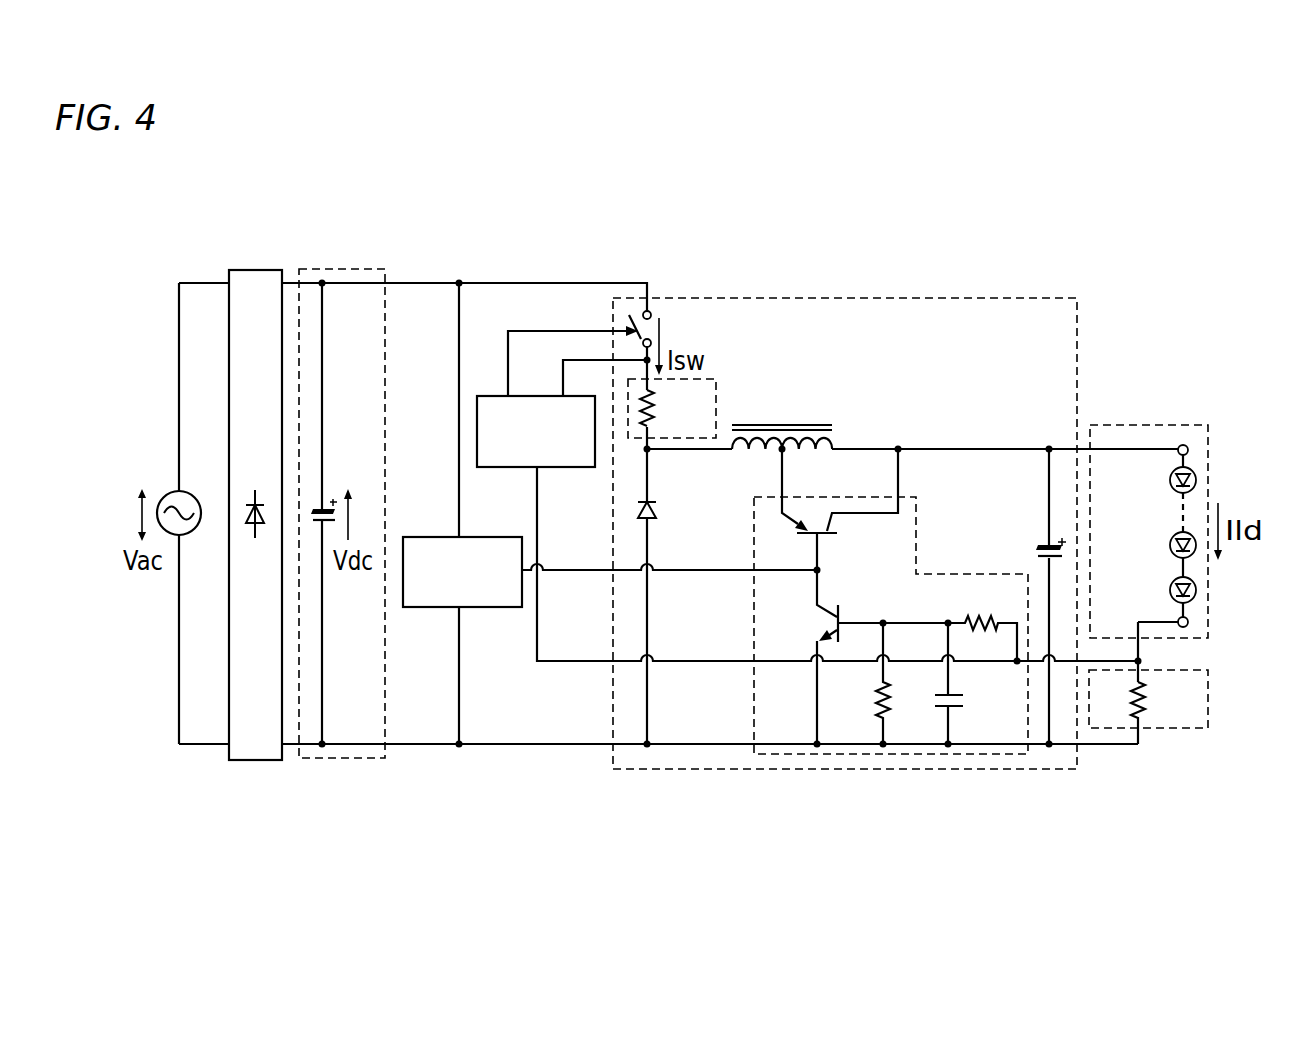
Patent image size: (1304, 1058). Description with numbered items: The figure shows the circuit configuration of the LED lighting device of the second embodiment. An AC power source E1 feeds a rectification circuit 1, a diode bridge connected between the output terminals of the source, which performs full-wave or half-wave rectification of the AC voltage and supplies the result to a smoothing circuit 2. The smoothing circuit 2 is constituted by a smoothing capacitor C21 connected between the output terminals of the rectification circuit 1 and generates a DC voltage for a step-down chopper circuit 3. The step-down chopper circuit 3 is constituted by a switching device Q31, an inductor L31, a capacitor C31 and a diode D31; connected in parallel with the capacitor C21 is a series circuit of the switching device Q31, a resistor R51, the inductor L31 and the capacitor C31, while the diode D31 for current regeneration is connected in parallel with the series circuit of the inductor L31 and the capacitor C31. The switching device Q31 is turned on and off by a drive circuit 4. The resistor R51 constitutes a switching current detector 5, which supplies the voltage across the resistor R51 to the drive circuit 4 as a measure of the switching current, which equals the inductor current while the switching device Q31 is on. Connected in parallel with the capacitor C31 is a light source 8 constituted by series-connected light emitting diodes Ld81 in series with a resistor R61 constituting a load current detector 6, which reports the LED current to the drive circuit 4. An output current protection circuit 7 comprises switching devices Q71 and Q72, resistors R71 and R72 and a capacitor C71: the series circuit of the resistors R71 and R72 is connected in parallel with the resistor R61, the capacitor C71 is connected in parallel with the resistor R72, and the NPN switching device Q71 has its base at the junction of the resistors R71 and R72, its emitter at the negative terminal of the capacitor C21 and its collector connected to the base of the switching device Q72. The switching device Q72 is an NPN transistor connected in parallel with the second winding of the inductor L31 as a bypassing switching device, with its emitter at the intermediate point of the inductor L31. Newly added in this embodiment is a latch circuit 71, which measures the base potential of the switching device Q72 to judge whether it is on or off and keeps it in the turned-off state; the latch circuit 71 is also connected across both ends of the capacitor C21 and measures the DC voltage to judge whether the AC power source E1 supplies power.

The rectification circuit 1 is at (255, 268).
The smoothing circuit 2 is at (338, 268).
The step-down chopper circuit 3 is at (810, 295).
The drive circuit 4 is at (565, 458).
The switching current detector 5 is at (687, 400).
The load current detector 6 is at (1162, 699).
The output current protection circuit 7 is at (948, 572).
The light source 8 is at (1149, 507).
The latch circuit 71 is at (433, 543).
The AC power source E1 is at (187, 496).
The smoothing capacitor C21 is at (342, 486).
The switching device Q31 is at (668, 326).
The resistor R51 is at (673, 408).
The diode D31 is at (675, 512).
The inductor L31 is at (781, 440).
The switching device Q72 is at (840, 509).
The switching device Q71 is at (857, 657).
The resistor R71 is at (982, 621).
The resistor R72 is at (857, 683).
The capacitor C71 is at (973, 683).
The capacitor C31 is at (1033, 534).
The light emitting diode Ld81 is at (1149, 536).
The resistor R61 is at (1164, 700).